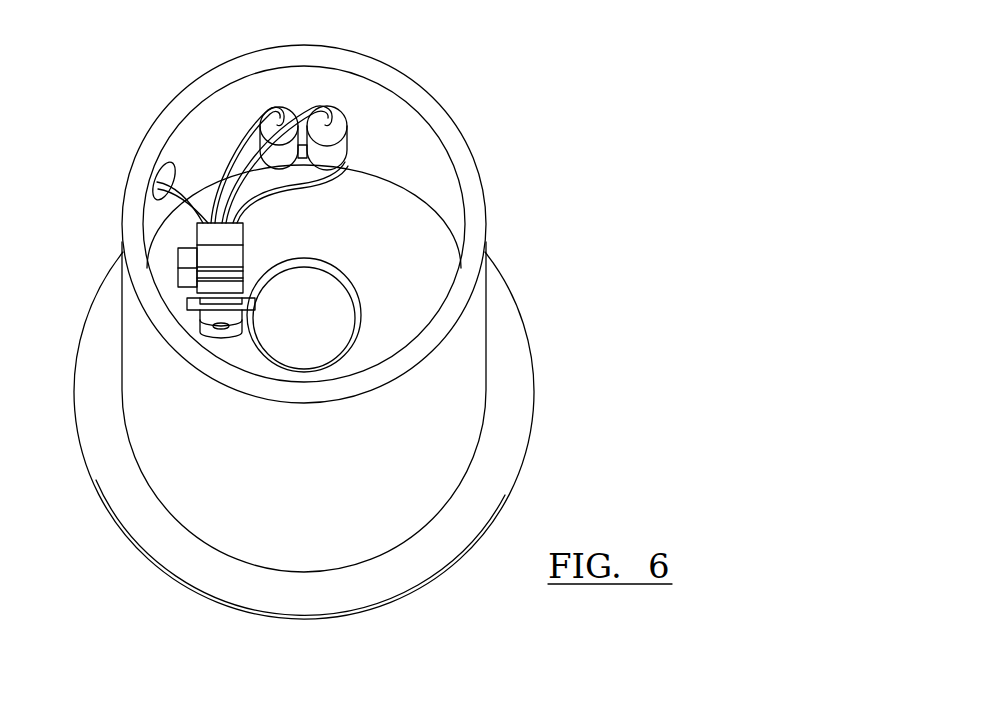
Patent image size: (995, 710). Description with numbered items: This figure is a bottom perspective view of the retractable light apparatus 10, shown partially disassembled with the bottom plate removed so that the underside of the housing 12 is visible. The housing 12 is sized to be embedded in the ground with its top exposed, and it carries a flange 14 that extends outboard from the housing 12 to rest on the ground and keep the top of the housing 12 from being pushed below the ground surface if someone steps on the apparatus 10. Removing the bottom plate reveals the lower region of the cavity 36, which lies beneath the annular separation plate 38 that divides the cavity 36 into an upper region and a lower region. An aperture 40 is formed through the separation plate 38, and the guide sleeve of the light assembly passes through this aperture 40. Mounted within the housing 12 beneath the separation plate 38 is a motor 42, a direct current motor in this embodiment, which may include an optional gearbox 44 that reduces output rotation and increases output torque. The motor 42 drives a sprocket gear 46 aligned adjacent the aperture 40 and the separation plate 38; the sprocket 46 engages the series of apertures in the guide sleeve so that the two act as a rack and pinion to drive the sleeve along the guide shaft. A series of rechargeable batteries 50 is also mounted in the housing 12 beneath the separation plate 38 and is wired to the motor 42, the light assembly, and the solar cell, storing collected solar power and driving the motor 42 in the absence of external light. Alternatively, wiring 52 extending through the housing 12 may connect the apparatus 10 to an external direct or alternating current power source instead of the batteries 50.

The retractable light apparatus 10 is at (282, 447).
The housing 12 is at (83, 472).
The flange 14 is at (75, 412).
The cavity 36 is at (372, 106).
The annular separation plate 38 is at (410, 257).
The aperture 40 is at (323, 373).
The motor 42 is at (243, 237).
The gearbox 44 is at (178, 287).
The sprocket gear 46 is at (187, 304).
The rechargeable batteries 50 is at (347, 135).
The wiring 52 is at (189, 195).